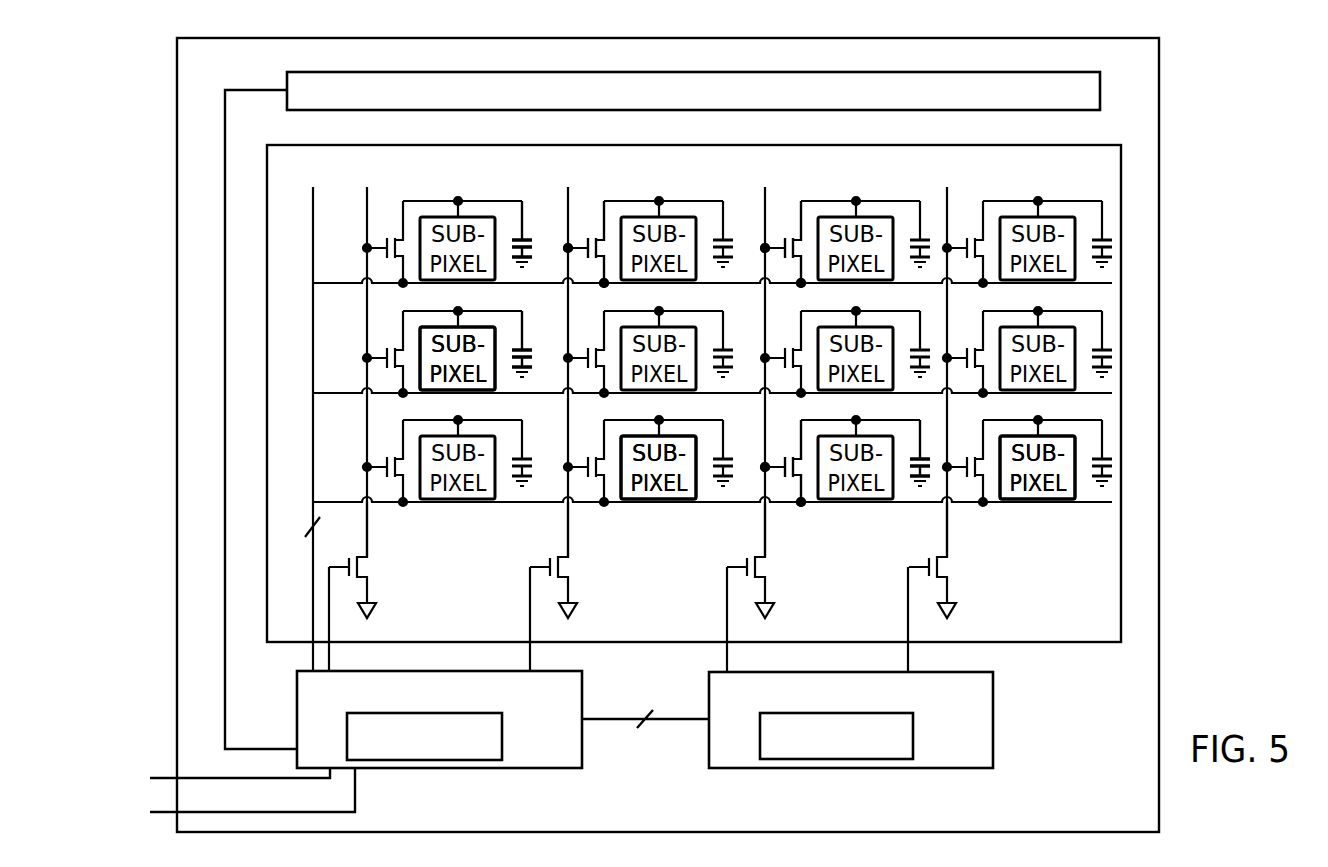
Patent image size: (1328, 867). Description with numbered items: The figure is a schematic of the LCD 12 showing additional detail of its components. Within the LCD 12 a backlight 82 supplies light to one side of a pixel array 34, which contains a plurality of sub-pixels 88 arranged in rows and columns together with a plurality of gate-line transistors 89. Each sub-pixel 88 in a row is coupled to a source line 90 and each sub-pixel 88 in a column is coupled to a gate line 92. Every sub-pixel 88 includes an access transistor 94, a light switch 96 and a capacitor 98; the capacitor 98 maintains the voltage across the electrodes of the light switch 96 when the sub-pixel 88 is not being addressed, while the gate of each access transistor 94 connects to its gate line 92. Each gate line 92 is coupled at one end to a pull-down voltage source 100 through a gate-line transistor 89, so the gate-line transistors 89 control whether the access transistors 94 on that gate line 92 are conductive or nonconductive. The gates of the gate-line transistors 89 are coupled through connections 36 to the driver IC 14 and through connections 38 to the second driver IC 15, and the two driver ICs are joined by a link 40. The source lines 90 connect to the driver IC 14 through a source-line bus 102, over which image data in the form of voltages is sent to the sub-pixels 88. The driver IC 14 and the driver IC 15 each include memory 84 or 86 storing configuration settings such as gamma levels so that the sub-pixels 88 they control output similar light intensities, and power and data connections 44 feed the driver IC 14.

The LCD 12 is at (120, 107).
The driver IC 14 is at (468, 770).
The slave driver IC 15 is at (862, 770).
The pixel array 34 is at (1121, 287).
The master driver gate connections 36 is at (329, 617).
The slave driver gate connections 38 is at (727, 625).
The previously described component 40 is at (625, 725).
The previously described component 44 is at (170, 843).
The backlight 82 is at (852, 72).
The memory 84 is at (502, 728).
The memory 86 is at (913, 728).
The sub-pixel 88 is at (517, 186).
The gate-line transistor 89 is at (381, 555).
The source line 90 is at (351, 281).
The gate line 92 is at (368, 218).
The access transistor 94 is at (584, 238).
The light switch 96 is at (420, 352).
The capacitor 98 is at (526, 236).
The pull-down voltage source 100 is at (375, 609).
The source-line bus 102 is at (267, 392).